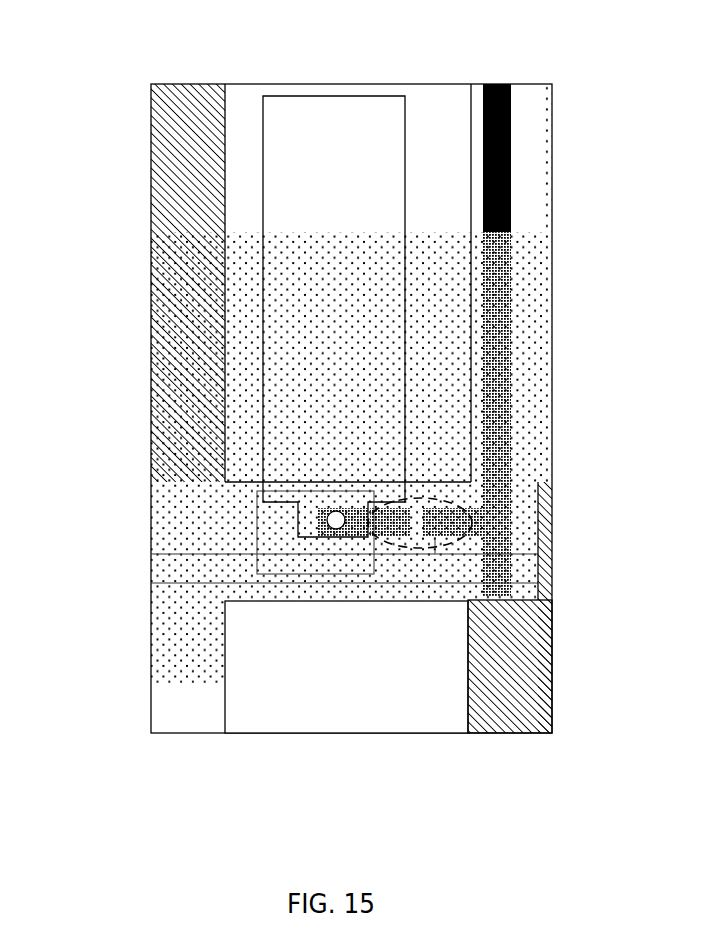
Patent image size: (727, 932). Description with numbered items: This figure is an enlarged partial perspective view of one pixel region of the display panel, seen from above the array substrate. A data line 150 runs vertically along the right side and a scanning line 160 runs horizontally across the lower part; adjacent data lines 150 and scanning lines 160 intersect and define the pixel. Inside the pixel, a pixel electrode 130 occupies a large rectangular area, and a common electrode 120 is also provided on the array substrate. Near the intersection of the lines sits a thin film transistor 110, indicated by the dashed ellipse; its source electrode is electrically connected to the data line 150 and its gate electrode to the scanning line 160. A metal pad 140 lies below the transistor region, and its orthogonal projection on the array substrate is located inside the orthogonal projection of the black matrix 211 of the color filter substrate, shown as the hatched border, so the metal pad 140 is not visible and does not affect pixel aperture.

The thin film transistor 110 is at (417, 496).
The common electrode 120 is at (248, 92).
The pixel electrode 130 is at (313, 115).
The metal pad 140 is at (328, 575).
The data line 150 is at (502, 270).
The scanning line 160 is at (167, 571).
The black matrix 211 is at (538, 734).